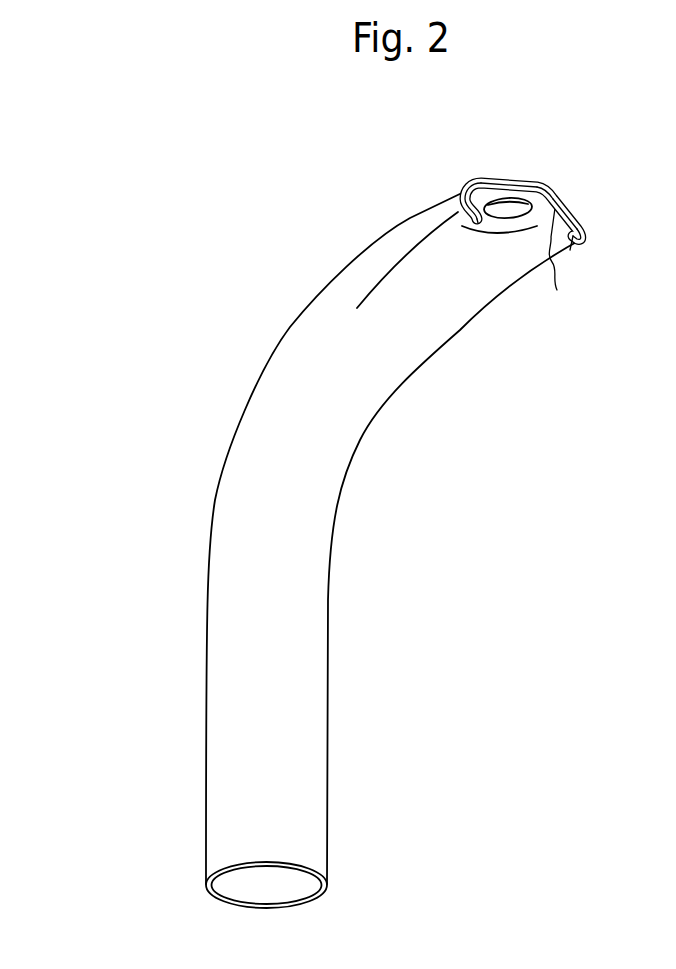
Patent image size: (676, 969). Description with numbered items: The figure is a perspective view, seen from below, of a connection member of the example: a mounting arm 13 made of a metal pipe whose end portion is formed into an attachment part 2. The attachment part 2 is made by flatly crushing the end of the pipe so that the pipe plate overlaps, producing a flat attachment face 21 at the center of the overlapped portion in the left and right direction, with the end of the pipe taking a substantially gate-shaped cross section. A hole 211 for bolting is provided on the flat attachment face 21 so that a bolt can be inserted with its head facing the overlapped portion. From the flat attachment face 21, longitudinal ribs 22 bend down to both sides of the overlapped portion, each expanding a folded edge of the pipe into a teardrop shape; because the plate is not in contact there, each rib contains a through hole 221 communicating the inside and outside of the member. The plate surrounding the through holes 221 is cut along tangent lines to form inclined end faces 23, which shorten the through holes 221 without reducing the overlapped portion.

The attachment part 2 is at (473, 218).
The mounting arm 13 is at (224, 477).
The flat attachment face 21 is at (510, 178).
The hole for bolting 211 is at (532, 178).
The longitudinal rib 22 is at (450, 210).
The through hole 221 is at (458, 192).
The inclined end face 23 is at (468, 226).